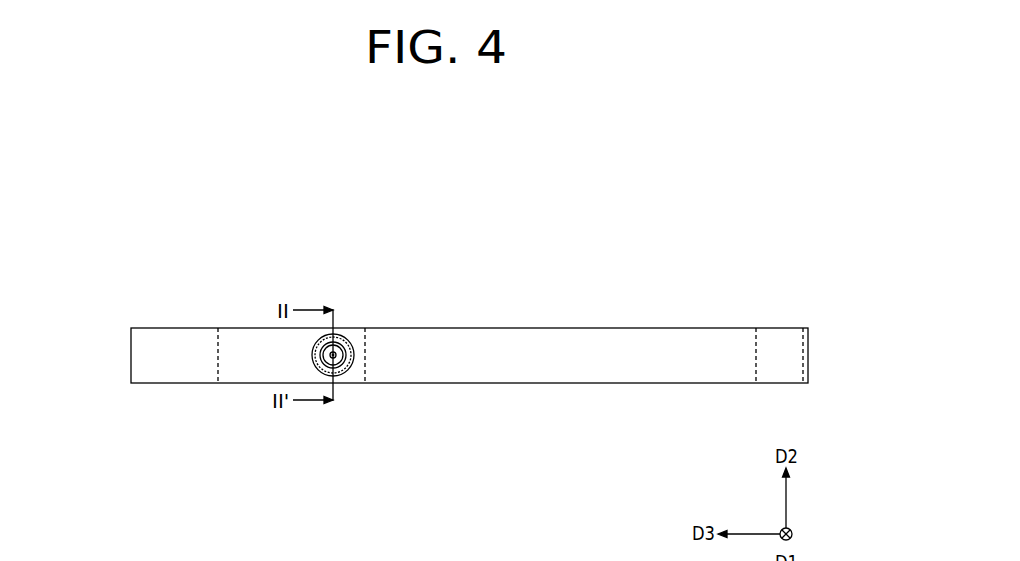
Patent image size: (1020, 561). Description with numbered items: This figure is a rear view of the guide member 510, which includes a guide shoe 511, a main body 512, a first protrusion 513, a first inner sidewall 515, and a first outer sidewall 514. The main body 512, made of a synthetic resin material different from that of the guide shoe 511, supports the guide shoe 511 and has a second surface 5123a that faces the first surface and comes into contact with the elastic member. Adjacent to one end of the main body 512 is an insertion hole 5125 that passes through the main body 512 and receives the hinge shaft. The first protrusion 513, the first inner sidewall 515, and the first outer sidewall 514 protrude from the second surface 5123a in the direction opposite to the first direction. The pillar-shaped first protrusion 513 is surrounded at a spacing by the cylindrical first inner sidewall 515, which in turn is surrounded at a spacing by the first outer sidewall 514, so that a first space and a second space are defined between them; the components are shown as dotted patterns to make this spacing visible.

The guide member 510 is at (697, 197).
The guide shoe 511 is at (146, 354).
The main body 512 is at (433, 327).
The second surface 5123a is at (538, 342).
The insertion hole 5125 is at (757, 350).
The first protrusion 513 is at (346, 350).
The first outer sidewall 514 is at (355, 356).
The first inner sidewall 515 is at (347, 372).